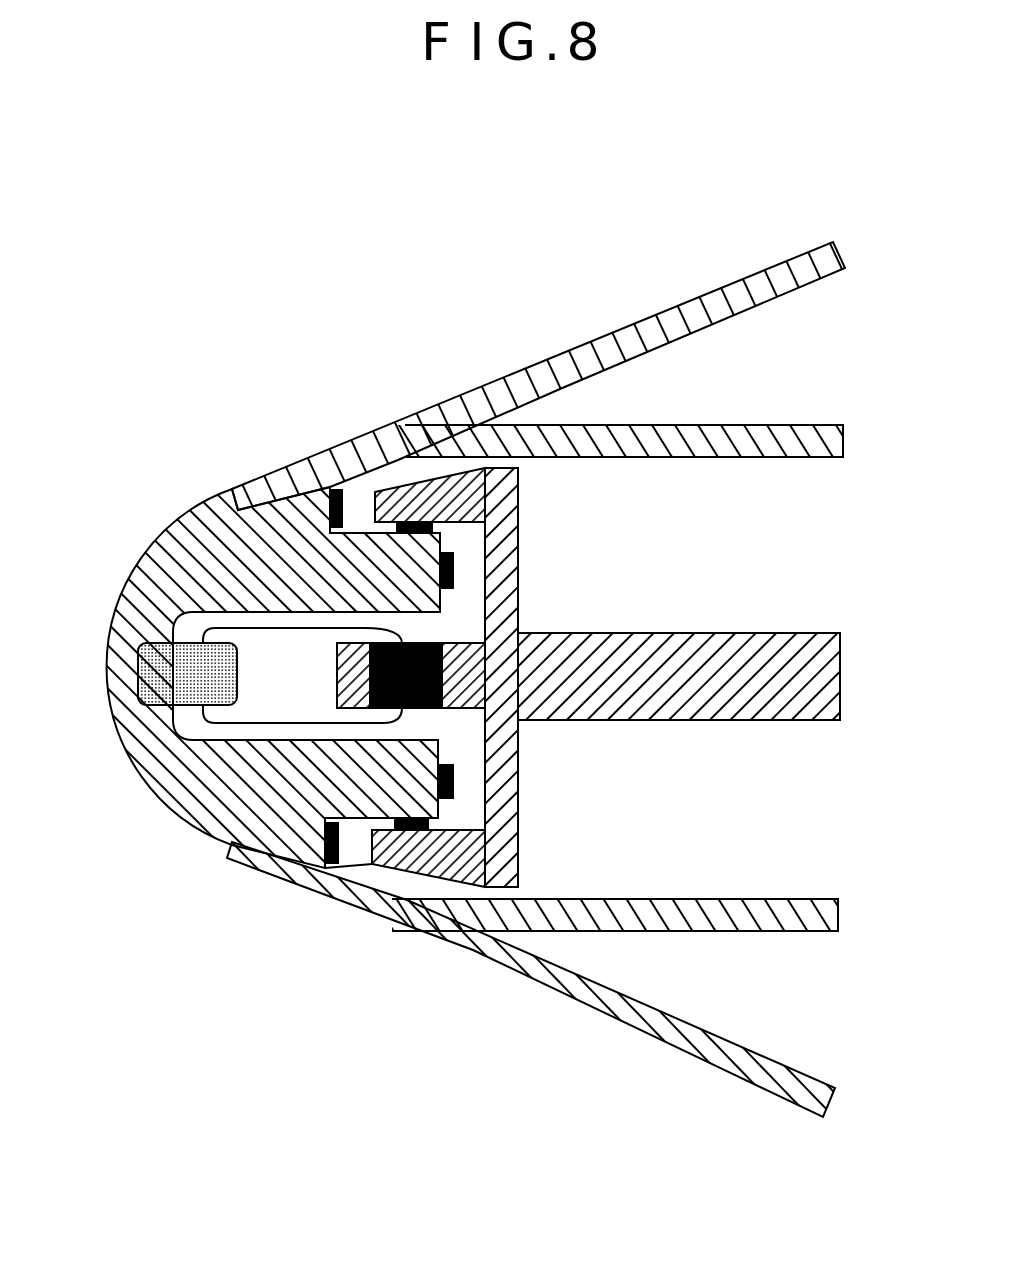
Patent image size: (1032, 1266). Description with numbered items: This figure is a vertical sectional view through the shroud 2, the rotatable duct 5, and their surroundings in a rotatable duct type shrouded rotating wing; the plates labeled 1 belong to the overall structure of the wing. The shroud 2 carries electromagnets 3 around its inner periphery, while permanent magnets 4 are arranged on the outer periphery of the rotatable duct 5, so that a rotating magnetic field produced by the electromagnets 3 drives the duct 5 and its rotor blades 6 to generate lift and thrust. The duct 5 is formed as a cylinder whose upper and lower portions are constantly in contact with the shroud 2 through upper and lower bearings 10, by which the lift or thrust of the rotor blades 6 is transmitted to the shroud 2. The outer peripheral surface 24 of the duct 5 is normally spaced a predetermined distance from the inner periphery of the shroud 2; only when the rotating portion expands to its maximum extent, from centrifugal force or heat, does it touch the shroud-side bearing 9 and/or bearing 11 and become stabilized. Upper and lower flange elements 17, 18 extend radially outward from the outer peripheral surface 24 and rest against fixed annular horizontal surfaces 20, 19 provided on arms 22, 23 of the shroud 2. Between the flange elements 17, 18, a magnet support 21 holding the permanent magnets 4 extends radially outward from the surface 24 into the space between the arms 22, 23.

The plate 1 is at (612, 1017).
The shroud 2 is at (175, 797).
The electromagnets 3 is at (138, 681).
The permanent magnets 4 is at (423, 641).
The rotatable duct 5 is at (518, 540).
The rotor blades 6 is at (710, 635).
The bearing 9 is at (450, 782).
The bearings 10 is at (420, 835).
The bearing 11 is at (333, 863).
The upper flange element 17 is at (398, 483).
The lower flange element 18 is at (400, 832).
The annular horizontal surface 19 is at (357, 825).
The annular horizontal surface 20 is at (360, 537).
The magnet support 21 is at (468, 641).
The arm 22 is at (350, 578).
The arm 23 is at (350, 775).
The outer peripheral surface 24 is at (467, 752).